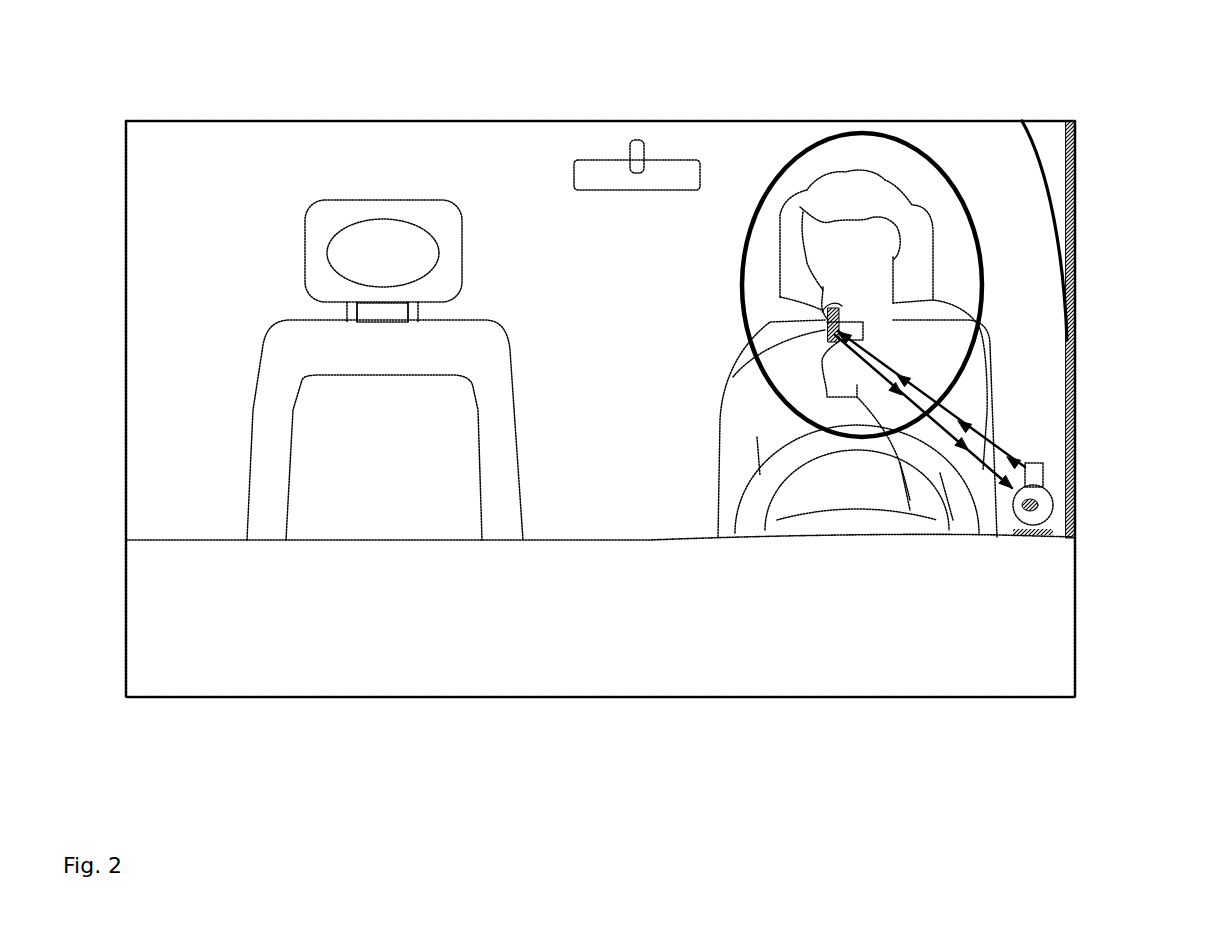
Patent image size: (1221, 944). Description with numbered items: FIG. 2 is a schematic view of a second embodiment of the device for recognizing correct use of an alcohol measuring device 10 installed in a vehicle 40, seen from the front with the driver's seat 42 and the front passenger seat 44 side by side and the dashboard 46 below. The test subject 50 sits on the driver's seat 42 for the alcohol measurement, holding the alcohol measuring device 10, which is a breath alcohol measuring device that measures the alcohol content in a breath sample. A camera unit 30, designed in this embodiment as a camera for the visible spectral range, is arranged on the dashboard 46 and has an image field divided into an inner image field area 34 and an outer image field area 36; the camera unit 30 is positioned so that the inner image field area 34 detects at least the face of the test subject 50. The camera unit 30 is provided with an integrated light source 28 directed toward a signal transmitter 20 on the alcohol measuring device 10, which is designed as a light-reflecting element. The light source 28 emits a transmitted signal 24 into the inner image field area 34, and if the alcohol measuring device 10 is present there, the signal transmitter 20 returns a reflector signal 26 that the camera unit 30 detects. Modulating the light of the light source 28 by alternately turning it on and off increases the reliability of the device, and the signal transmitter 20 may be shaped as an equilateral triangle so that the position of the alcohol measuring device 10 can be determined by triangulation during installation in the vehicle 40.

The alcohol measuring device 10 is at (812, 340).
The signal transmitter 20 is at (828, 320).
The transmitted signal 24 is at (955, 417).
The reflector signal 26 is at (987, 445).
The light source 28 is at (1043, 470).
The camera unit 30 is at (1033, 496).
The inner image field area 34 is at (942, 235).
The outer image field area 36 is at (752, 187).
The vehicle 40 is at (1095, 122).
The driver's seat 42 is at (975, 362).
The front passenger seat 44 is at (300, 333).
The dashboard 46 is at (1030, 610).
The test subject 50 is at (845, 185).